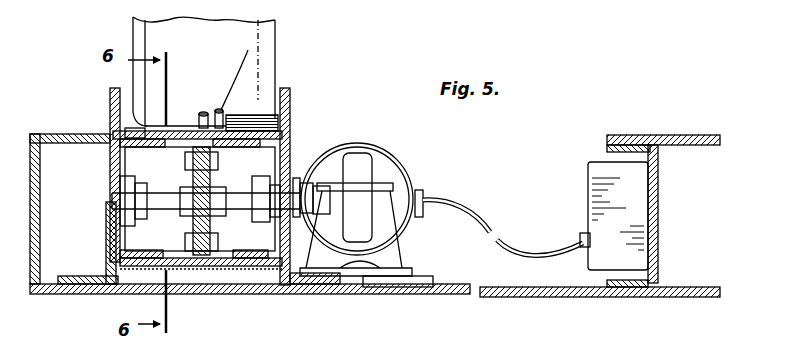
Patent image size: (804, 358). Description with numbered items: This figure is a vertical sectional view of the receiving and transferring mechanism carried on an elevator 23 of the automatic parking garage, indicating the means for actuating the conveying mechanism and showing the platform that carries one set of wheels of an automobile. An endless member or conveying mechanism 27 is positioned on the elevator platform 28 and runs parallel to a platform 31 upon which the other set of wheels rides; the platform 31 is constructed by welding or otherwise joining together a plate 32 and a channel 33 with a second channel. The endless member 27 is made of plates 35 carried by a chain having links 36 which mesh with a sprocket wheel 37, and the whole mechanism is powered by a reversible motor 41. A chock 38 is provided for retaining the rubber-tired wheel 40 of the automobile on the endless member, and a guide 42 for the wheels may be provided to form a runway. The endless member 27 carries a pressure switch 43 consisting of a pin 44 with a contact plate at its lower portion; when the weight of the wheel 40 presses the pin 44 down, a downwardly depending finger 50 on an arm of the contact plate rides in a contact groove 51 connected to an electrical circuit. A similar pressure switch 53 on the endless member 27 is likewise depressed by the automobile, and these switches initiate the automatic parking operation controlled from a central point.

The elevator 23 is at (426, 298).
The endless member 27 is at (286, 127).
The elevator platform 28 is at (246, 294).
The platform 31 is at (715, 134).
The plate 32 is at (606, 142).
The channel 33 is at (658, 207).
The plate 35 is at (214, 268).
The link 36 is at (126, 129).
The sprocket wheel 37 is at (212, 168).
The chock 38 is at (228, 116).
The rubber-tired wheel 40 is at (276, 42).
The reversible motor 41 is at (400, 172).
The guide 42 is at (110, 100).
The pressure switch 43 is at (211, 108).
The pin 44 is at (200, 112).
The finger 50 is at (137, 272).
The contact groove 51 is at (278, 290).
The pressure switch 53 is at (234, 73).